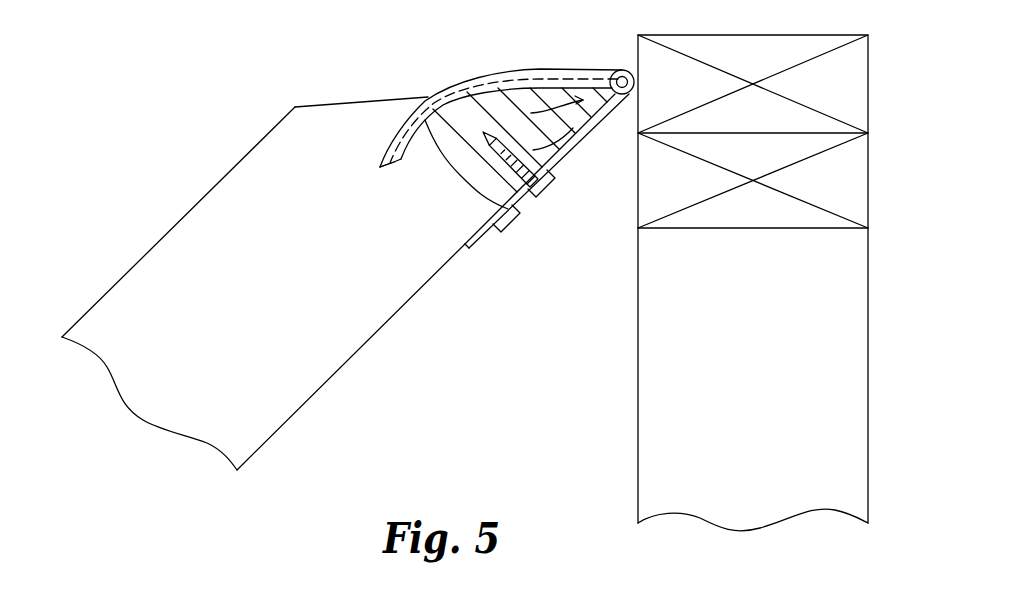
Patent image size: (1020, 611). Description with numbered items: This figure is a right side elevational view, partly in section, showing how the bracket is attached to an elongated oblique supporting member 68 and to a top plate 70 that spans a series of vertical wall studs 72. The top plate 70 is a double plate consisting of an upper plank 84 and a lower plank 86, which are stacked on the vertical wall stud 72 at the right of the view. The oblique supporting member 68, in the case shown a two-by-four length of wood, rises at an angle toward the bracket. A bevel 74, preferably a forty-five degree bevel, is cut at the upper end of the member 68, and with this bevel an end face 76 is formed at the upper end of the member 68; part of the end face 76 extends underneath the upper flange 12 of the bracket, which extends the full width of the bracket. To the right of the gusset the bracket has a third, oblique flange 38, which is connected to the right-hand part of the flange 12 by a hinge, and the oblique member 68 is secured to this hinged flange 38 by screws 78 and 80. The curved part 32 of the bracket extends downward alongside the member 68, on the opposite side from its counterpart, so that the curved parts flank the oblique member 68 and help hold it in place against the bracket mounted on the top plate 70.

The second flange 12 is at (540, 69).
The curved part 32 is at (398, 127).
The oblique flange 38 is at (483, 237).
The oblique supporting member 68 is at (317, 355).
The top plate 70 is at (840, 241).
The vertical wall stud 72 is at (655, 367).
The bevel 74 is at (338, 88).
The end face 76 is at (394, 96).
The screw 78 is at (512, 217).
The screw 80 is at (545, 192).
The upper plank 84 is at (847, 82).
The lower plank 86 is at (847, 163).